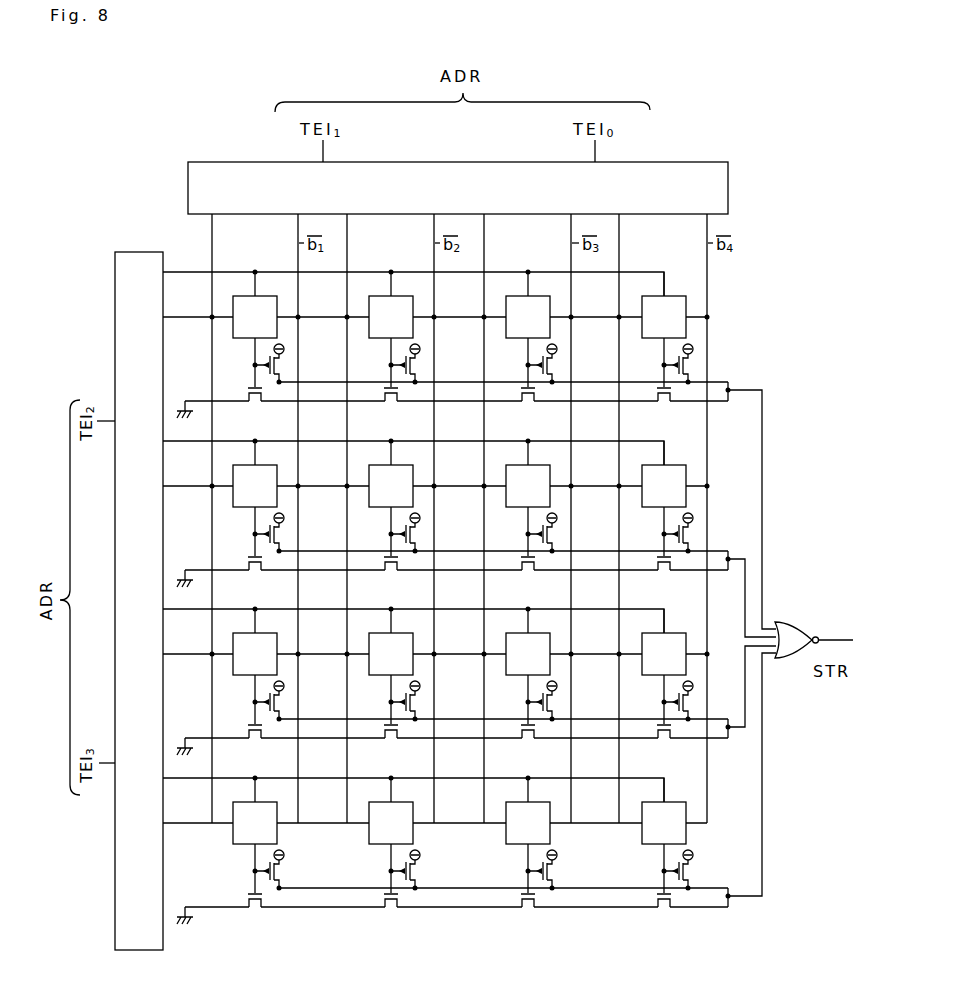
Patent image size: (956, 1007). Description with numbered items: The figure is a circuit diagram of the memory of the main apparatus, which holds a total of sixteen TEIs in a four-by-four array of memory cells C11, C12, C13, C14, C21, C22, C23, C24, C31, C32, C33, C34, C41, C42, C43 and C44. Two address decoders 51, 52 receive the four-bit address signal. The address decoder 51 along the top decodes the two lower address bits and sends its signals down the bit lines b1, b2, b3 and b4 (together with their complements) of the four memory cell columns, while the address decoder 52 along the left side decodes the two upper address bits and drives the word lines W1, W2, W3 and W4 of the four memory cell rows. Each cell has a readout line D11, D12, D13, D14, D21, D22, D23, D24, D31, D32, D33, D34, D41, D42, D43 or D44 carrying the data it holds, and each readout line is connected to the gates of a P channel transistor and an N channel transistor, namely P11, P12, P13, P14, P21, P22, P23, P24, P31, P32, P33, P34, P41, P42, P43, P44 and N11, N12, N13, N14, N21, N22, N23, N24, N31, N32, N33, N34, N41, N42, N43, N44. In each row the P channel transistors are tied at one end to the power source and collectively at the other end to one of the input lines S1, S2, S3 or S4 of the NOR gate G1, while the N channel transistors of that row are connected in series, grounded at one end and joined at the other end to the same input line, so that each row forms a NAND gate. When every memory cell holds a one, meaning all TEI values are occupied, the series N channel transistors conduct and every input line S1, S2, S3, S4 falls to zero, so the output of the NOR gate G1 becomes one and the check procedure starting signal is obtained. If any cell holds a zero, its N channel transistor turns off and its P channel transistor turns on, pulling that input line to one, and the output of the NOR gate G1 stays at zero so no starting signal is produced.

The address decoder 51 is at (486, 162).
The address decoder 52 is at (116, 302).
The NOR gate G1 is at (803, 620).
The input line S1 is at (764, 452).
The input line S2 is at (746, 598).
The input line S3 is at (749, 704).
The input line S4 is at (764, 792).
The word line W1 is at (436, 317).
The word line W2 is at (436, 486).
The word line W3 is at (436, 654).
The word line W4 is at (435, 823).
The bit line b1 is at (213, 243).
The bit line b2 is at (348, 243).
The bit line b3 is at (485, 243).
The bit line b4 is at (620, 243).
The memory cell C11 is at (255, 305).
The memory cell C12 is at (391, 305).
The memory cell C13 is at (528, 305).
The memory cell C14 is at (664, 305).
The memory cell C21 is at (255, 474).
The memory cell C22 is at (391, 474).
The memory cell C23 is at (528, 474).
The memory cell C24 is at (664, 474).
The memory cell C31 is at (255, 642).
The memory cell C32 is at (391, 642).
The memory cell C33 is at (528, 642).
The memory cell C34 is at (664, 642).
The memory cell C41 is at (255, 811).
The memory cell C42 is at (391, 811).
The memory cell C43 is at (528, 811).
The memory cell C44 is at (664, 811).
The readout line D11 is at (237, 360).
The readout line D12 is at (373, 360).
The readout line D13 is at (510, 360).
The readout line D14 is at (646, 360).
The readout line D21 is at (237, 529).
The readout line D22 is at (373, 529).
The readout line D23 is at (510, 529).
The readout line D24 is at (646, 529).
The readout line D31 is at (237, 697).
The readout line D32 is at (373, 697).
The readout line D33 is at (510, 697).
The readout line D34 is at (646, 697).
The readout line D41 is at (237, 866).
The readout line D42 is at (373, 866).
The readout line D43 is at (510, 866).
The readout line D44 is at (646, 866).
The P channel transistor P11 is at (292, 364).
The P channel transistor P12 is at (428, 364).
The P channel transistor P13 is at (565, 364).
The P channel transistor P14 is at (701, 364).
The P channel transistor P21 is at (292, 533).
The P channel transistor P22 is at (428, 533).
The P channel transistor P23 is at (565, 533).
The P channel transistor P24 is at (701, 533).
The P channel transistor P31 is at (292, 701).
The P channel transistor P32 is at (428, 701).
The P channel transistor P33 is at (565, 701).
The P channel transistor P34 is at (701, 701).
The P channel transistor P41 is at (292, 870).
The P channel transistor P42 is at (428, 870).
The P channel transistor P43 is at (565, 870).
The P channel transistor P44 is at (701, 870).
The N channel transistor N11 is at (257, 405).
The N channel transistor N12 is at (393, 405).
The N channel transistor N13 is at (530, 405).
The N channel transistor N14 is at (666, 405).
The N channel transistor N21 is at (257, 574).
The N channel transistor N22 is at (393, 574).
The N channel transistor N23 is at (530, 574).
The N channel transistor N24 is at (666, 574).
The N channel transistor N31 is at (257, 742).
The N channel transistor N32 is at (393, 742).
The N channel transistor N33 is at (530, 742).
The N channel transistor N34 is at (666, 742).
The N channel transistor N41 is at (257, 911).
The N channel transistor N42 is at (393, 911).
The N channel transistor N43 is at (530, 911).
The N channel transistor N44 is at (666, 911).